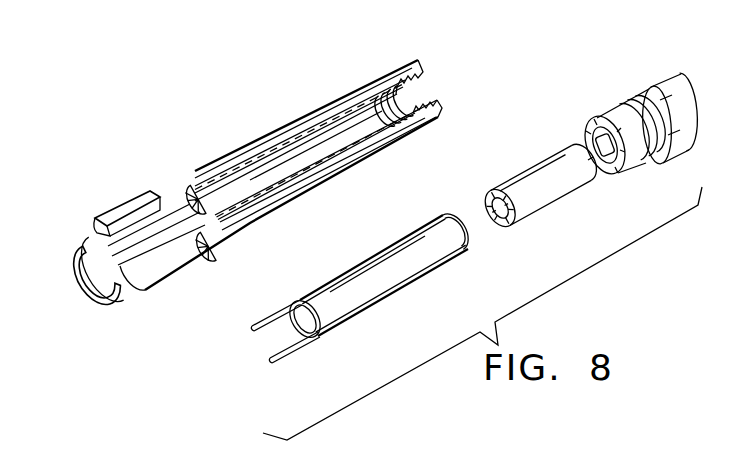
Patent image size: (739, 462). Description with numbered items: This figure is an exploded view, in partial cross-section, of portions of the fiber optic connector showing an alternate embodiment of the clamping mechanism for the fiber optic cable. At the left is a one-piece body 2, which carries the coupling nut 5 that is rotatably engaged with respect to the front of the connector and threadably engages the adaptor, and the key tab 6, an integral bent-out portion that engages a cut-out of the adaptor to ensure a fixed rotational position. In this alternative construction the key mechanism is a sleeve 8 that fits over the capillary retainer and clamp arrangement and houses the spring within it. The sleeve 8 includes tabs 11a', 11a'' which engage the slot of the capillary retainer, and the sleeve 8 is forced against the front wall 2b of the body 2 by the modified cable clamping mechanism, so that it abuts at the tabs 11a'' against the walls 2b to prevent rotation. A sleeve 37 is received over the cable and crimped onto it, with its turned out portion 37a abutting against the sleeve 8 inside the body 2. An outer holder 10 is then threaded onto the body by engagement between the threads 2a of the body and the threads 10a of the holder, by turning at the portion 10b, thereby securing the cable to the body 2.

The one-piece body 2 is at (272, 212).
The threads 2a is at (412, 90).
The front wall 2b is at (202, 197).
The coupling nut 5 is at (128, 203).
The key tab 6 is at (80, 247).
The sleeve 8 is at (402, 282).
The outer holder 10 is at (617, 105).
The threads 10a is at (596, 117).
The portion 10b is at (650, 88).
The first conductor 11a' is at (311, 350).
The tabs 11a'' is at (276, 300).
The sleeve 37 is at (560, 158).
The turned out portion 37a is at (493, 187).